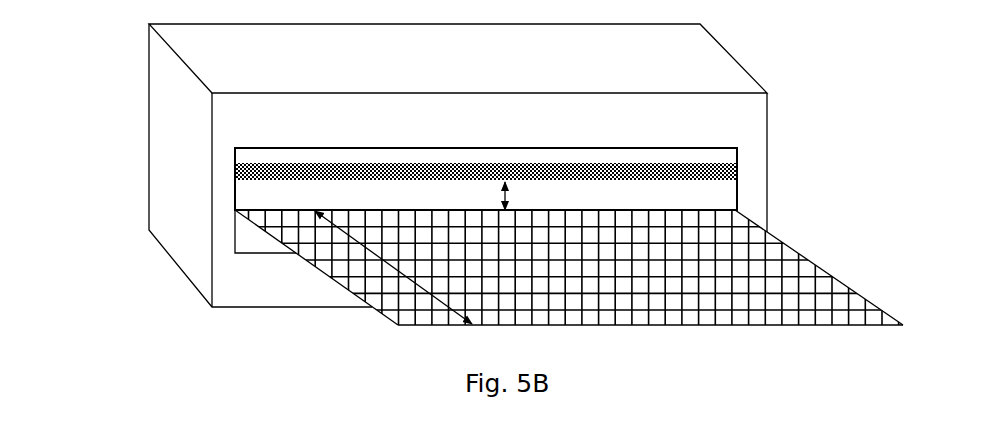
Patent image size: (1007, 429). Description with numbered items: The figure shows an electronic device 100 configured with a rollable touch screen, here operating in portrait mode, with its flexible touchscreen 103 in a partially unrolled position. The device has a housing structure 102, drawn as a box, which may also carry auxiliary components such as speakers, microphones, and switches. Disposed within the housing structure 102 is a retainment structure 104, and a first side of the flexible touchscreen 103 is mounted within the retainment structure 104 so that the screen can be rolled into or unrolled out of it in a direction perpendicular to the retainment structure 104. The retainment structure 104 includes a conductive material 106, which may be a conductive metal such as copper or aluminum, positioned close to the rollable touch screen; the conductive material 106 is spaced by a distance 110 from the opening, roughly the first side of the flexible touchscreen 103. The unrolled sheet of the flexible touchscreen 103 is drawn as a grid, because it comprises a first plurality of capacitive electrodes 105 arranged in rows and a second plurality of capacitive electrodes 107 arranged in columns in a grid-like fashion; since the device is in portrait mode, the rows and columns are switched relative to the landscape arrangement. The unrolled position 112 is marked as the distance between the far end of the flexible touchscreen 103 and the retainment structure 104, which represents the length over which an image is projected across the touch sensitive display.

The electronic device 100 is at (136, 30).
The housing structure 102 is at (149, 115).
The flexible touchscreen 103 is at (860, 279).
The retainment structure 104 is at (234, 222).
The first plurality of capacitive electrodes 105 is at (675, 326).
The conductive material 106 is at (234, 172).
The second plurality of capacitive electrodes 107 is at (792, 257).
The distance 110 is at (502, 188).
The unrolled position 112 is at (398, 271).